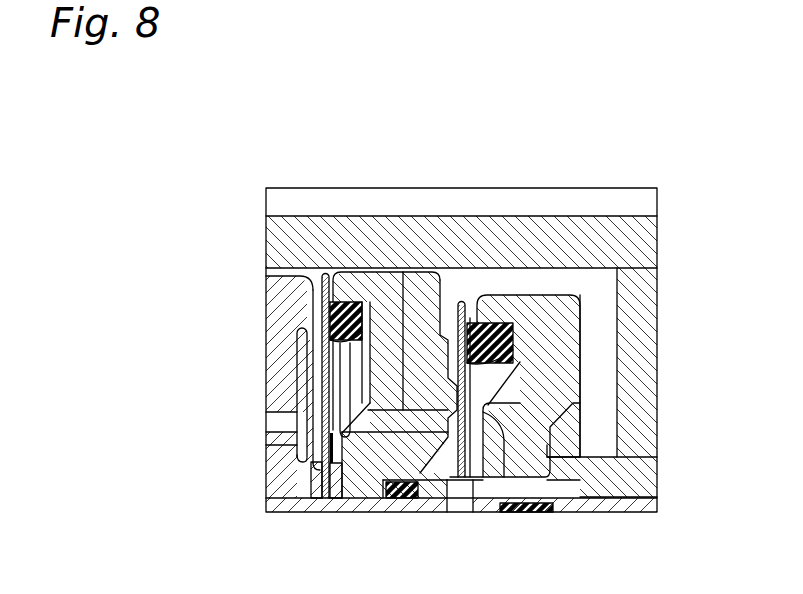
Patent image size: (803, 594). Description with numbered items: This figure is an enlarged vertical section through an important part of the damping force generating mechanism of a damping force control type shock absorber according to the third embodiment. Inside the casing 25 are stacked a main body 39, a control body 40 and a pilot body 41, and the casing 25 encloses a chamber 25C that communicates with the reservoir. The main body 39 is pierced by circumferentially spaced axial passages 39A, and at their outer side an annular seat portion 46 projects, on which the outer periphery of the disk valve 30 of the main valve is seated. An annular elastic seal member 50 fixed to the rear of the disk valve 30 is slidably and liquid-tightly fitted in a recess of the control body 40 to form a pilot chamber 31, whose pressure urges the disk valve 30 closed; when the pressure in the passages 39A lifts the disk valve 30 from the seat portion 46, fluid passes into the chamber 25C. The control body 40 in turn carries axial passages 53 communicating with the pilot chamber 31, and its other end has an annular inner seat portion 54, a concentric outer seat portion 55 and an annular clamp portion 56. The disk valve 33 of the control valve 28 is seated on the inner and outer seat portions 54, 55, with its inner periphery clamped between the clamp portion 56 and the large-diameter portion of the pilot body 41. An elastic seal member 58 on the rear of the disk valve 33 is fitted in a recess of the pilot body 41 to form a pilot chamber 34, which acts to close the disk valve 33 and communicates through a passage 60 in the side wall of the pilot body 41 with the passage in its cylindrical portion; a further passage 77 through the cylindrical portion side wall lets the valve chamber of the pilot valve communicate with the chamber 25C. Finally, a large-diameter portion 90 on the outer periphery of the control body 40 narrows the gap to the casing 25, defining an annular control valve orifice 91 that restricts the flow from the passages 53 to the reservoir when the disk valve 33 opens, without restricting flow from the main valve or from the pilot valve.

The casing 25 is at (637, 188).
The chamber 25C is at (576, 267).
The control valve 28 is at (517, 300).
The disk valve 30 is at (323, 278).
The pilot chamber 31 is at (400, 297).
The disk valve 33 is at (477, 318).
The pilot chamber 34 is at (560, 280).
The main body 39 is at (292, 306).
The passages 39A is at (285, 424).
The control body 40 is at (417, 285).
The pilot body 41 is at (607, 328).
The seat portion 46 is at (315, 273).
The elastic seal member 50 is at (377, 292).
The passages 53 is at (380, 440).
The inner seat portion 54 is at (503, 510).
The outer seat portion 55 is at (461, 300).
The clamp portion 56 is at (445, 483).
The elastic seal member 58 is at (505, 280).
The passage 60 is at (463, 498).
The passage 77 is at (600, 413).
The large-diameter portion 90 is at (347, 297).
The control valve orifice 91 is at (331, 290).